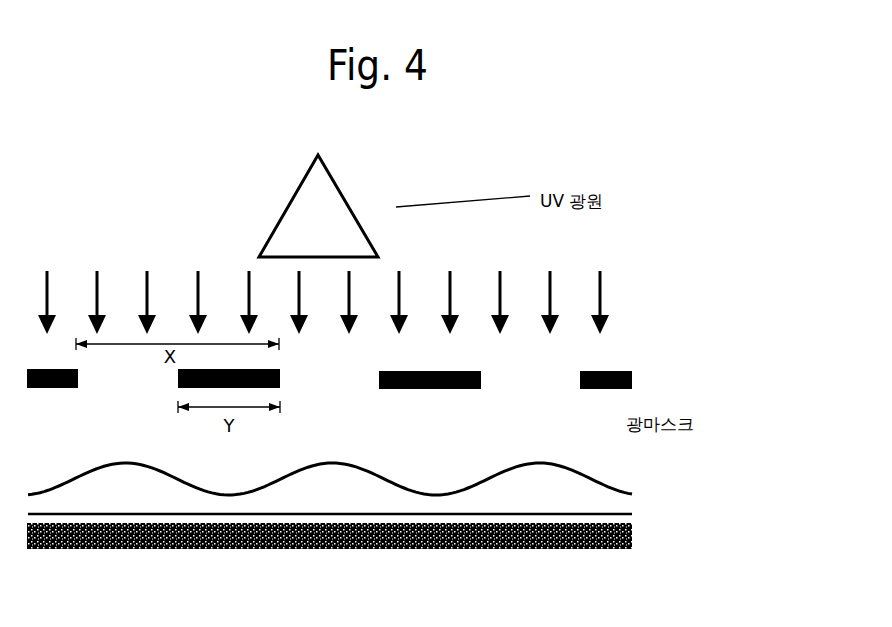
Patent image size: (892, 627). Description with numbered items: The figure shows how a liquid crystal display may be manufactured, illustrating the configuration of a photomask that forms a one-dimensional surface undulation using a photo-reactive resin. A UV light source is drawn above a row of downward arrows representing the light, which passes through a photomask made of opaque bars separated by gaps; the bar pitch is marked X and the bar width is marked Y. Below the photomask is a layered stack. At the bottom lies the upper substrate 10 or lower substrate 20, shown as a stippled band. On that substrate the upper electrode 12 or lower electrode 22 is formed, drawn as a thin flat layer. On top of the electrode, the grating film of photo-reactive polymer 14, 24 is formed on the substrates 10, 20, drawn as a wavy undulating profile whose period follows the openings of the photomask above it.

The upper substrate 10 is at (380, 541).
The lower substrate 20 is at (640, 539).
The upper electrode 12 is at (380, 513).
The lower electrode 22 is at (634, 520).
The photo-reactive polymer 14 is at (380, 479).
The photo-reactive polymer 24 is at (633, 487).